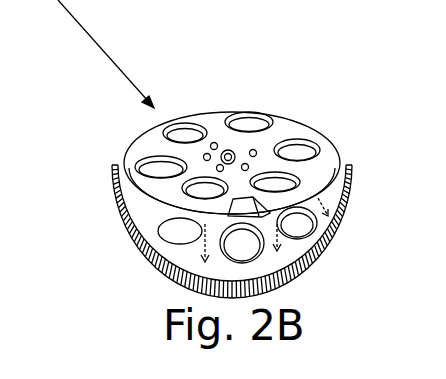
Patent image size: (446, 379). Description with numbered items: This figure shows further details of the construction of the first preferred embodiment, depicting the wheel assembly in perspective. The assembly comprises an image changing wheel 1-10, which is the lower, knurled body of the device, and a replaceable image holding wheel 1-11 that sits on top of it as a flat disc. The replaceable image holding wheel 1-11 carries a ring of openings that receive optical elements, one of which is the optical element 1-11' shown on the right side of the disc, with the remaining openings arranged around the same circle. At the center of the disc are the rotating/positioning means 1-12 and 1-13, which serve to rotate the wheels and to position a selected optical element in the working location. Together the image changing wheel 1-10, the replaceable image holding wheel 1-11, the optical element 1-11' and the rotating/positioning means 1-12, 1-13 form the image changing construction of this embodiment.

The image changing wheel 1-10 is at (141, 238).
The replaceable image holding wheel 1-11 is at (122, 173).
The optical element 1-11' is at (327, 134).
The rotating/positioning means 1-12 is at (214, 143).
The rotating/positioning means 1-13 is at (233, 153).